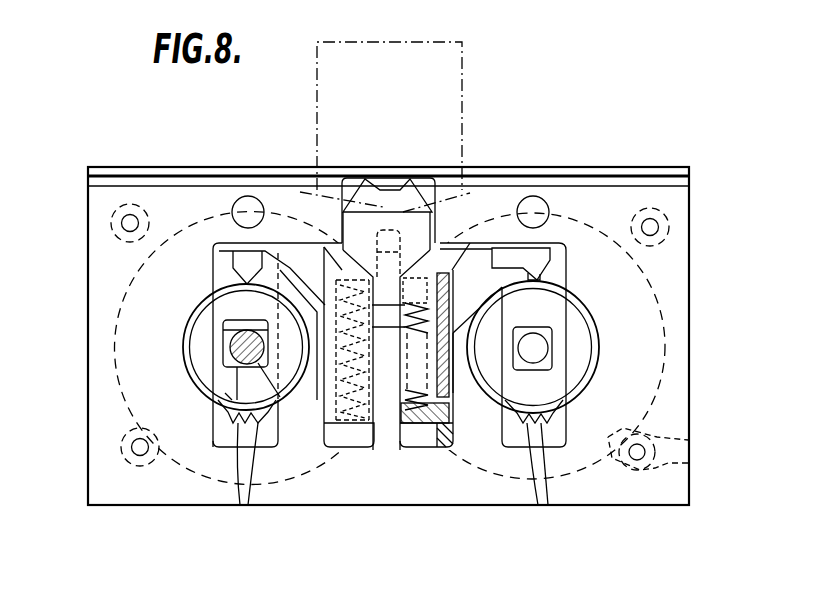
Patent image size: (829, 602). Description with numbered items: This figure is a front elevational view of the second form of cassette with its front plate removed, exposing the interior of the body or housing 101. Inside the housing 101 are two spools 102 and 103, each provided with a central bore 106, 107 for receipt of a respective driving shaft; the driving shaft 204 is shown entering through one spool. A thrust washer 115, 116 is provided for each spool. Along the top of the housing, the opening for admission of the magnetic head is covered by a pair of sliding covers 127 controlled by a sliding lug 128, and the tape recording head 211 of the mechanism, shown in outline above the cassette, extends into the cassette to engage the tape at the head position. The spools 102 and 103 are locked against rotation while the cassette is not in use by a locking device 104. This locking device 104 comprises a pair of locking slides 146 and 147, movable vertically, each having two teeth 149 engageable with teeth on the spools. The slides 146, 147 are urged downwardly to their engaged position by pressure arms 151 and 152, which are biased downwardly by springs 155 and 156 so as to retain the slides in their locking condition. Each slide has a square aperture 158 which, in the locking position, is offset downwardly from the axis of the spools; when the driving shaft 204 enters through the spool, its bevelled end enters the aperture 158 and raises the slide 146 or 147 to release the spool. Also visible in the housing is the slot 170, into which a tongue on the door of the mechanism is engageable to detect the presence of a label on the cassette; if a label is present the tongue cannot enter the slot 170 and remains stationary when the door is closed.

The housing 101 is at (667, 250).
The spool 102 is at (204, 484).
The spool 103 is at (585, 472).
The locking device 104 is at (203, 291).
The central bore 106 is at (270, 388).
The central bore 107 is at (540, 350).
The thrust washer 115 is at (200, 365).
The thrust washer 116 is at (575, 370).
The sliding covers 127 is at (168, 178).
The sliding lug 128 is at (417, 193).
The locking slide 146 is at (225, 393).
The locking slide 147 is at (553, 392).
The teeth 149 is at (392, 484).
The pressure arm 151 is at (214, 250).
The pressure arm 152 is at (537, 260).
The spring 155 is at (380, 435).
The spring 156 is at (440, 421).
The square aperture 158 is at (222, 318).
The slot 170 is at (687, 472).
The driving shaft 204 is at (233, 346).
The tape recording head 211 is at (402, 104).